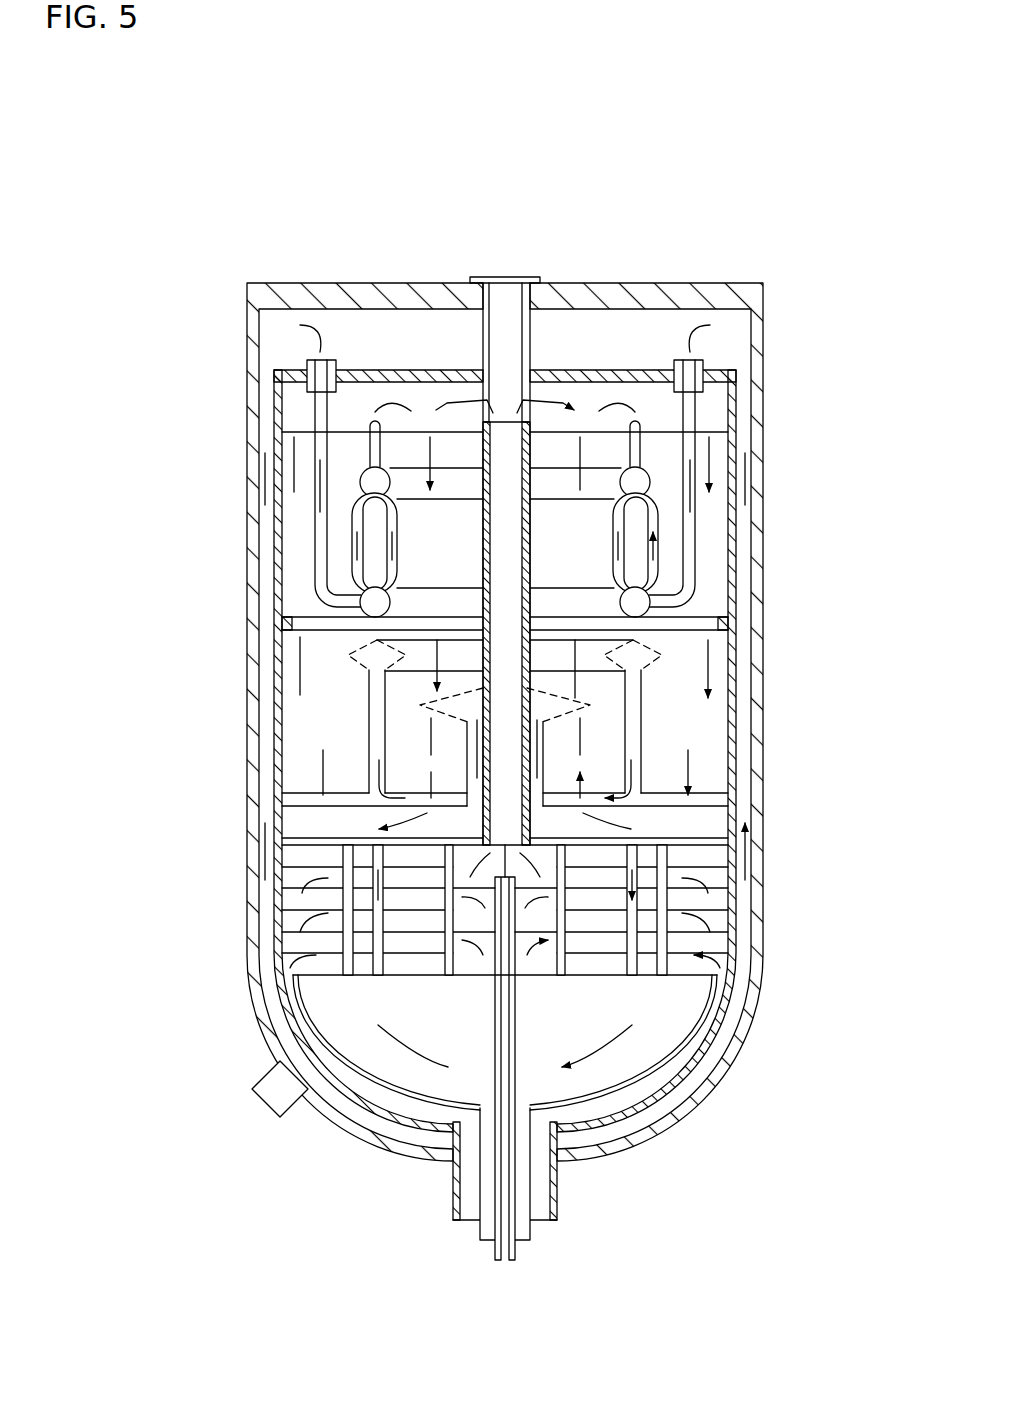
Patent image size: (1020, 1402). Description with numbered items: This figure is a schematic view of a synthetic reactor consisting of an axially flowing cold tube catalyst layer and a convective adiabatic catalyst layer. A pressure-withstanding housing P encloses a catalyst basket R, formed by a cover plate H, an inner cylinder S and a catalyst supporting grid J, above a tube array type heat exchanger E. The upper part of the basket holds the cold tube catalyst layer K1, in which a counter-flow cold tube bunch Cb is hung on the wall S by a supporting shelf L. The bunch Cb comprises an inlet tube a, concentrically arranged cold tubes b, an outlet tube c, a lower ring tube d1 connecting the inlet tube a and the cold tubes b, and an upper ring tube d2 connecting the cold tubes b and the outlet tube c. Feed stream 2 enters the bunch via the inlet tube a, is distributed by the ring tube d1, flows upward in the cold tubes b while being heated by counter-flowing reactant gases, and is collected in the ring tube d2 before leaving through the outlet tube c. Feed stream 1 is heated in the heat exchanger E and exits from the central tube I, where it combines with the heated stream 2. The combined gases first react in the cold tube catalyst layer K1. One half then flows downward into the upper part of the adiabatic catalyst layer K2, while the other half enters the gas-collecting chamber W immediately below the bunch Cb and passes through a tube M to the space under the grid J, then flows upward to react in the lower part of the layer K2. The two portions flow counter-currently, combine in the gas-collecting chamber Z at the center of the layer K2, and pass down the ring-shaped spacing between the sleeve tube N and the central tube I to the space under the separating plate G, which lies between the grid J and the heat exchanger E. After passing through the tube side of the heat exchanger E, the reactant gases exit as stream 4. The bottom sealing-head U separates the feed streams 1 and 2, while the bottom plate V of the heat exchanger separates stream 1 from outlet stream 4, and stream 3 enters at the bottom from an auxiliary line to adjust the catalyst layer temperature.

The housing P is at (247, 302).
The cover plate H is at (282, 375).
The cylinder S is at (277, 403).
The inlet tube a is at (710, 375).
The outlet tube c is at (642, 423).
The ring tube d2 is at (637, 473).
The cold tubes b is at (652, 517).
The cold tube bunch Cb is at (373, 578).
The cold tube catalyst layer K1 is at (600, 582).
The ring tube d1 is at (640, 612).
The supporting shelf L is at (290, 625).
The gas-collecting chamber W is at (637, 650).
The gas-collecting chamber Z is at (590, 705).
The catalyst basket R is at (295, 725).
The adiabatic catalyst layer K2 is at (687, 713).
The tube M is at (637, 747).
The sleeve tube N is at (542, 757).
The catalyst supporting grid J is at (315, 793).
The separating plate G is at (480, 820).
The central tube I is at (478, 843).
The heat exchanger E is at (293, 890).
The bottom plate V is at (670, 1065).
The bottom sealing-head U is at (657, 1102).
The feed gas stream 2 is at (270, 1097).
The feed gas stream 1 is at (468, 1192).
The outlet gas stream 4 is at (523, 1190).
The auxiliary gas stream 3 is at (505, 1262).